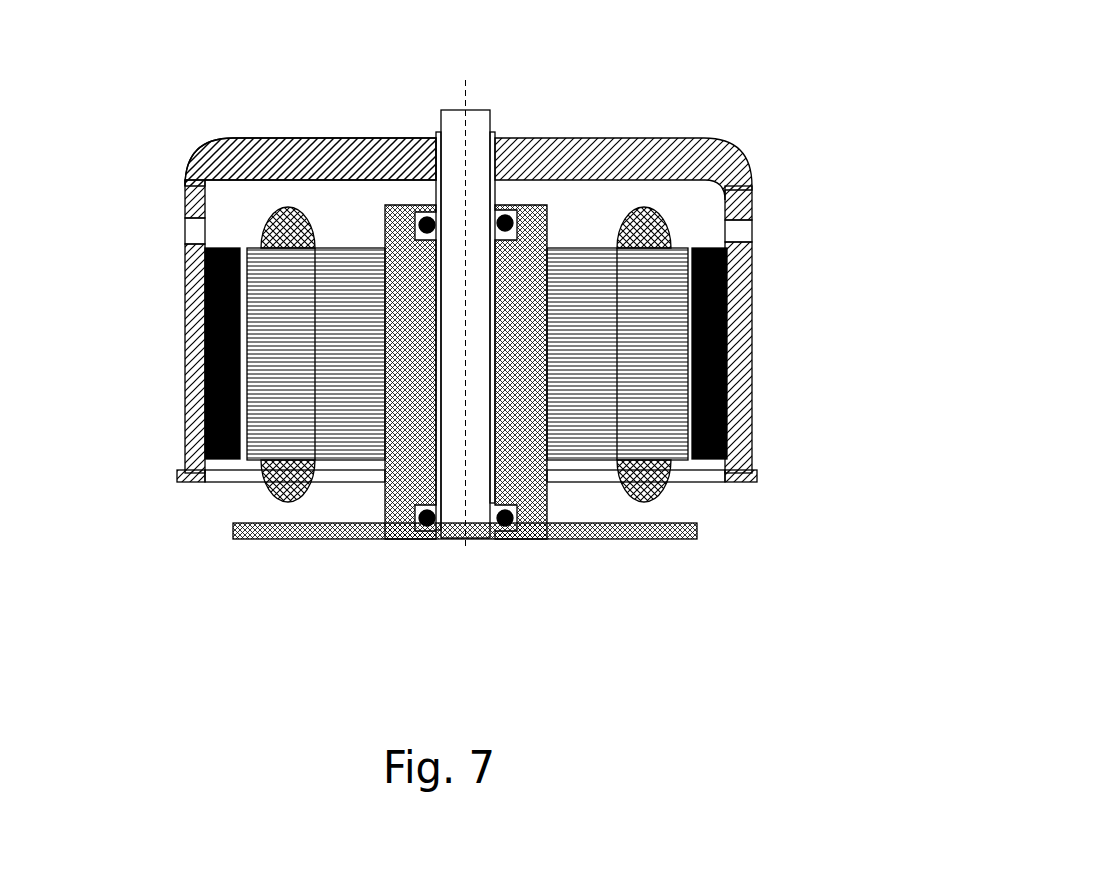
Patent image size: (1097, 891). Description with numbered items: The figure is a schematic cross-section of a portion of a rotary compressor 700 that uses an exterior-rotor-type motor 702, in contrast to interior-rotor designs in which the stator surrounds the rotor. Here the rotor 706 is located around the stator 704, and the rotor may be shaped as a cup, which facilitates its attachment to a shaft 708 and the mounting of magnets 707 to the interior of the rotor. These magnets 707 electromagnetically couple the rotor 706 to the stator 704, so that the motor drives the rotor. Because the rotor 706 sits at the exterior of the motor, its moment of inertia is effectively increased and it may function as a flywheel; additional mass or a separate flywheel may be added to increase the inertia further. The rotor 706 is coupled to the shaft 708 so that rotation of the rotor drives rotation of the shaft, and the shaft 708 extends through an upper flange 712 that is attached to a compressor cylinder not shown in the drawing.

The rotary compressor 700 is at (752, 92).
The exterior-rotor-type motor 702 is at (789, 299).
The stator 704 is at (252, 457).
The rotor 706 is at (747, 360).
The magnets 707 is at (205, 350).
The shaft 708 is at (447, 115).
The upper flange 712 is at (367, 540).